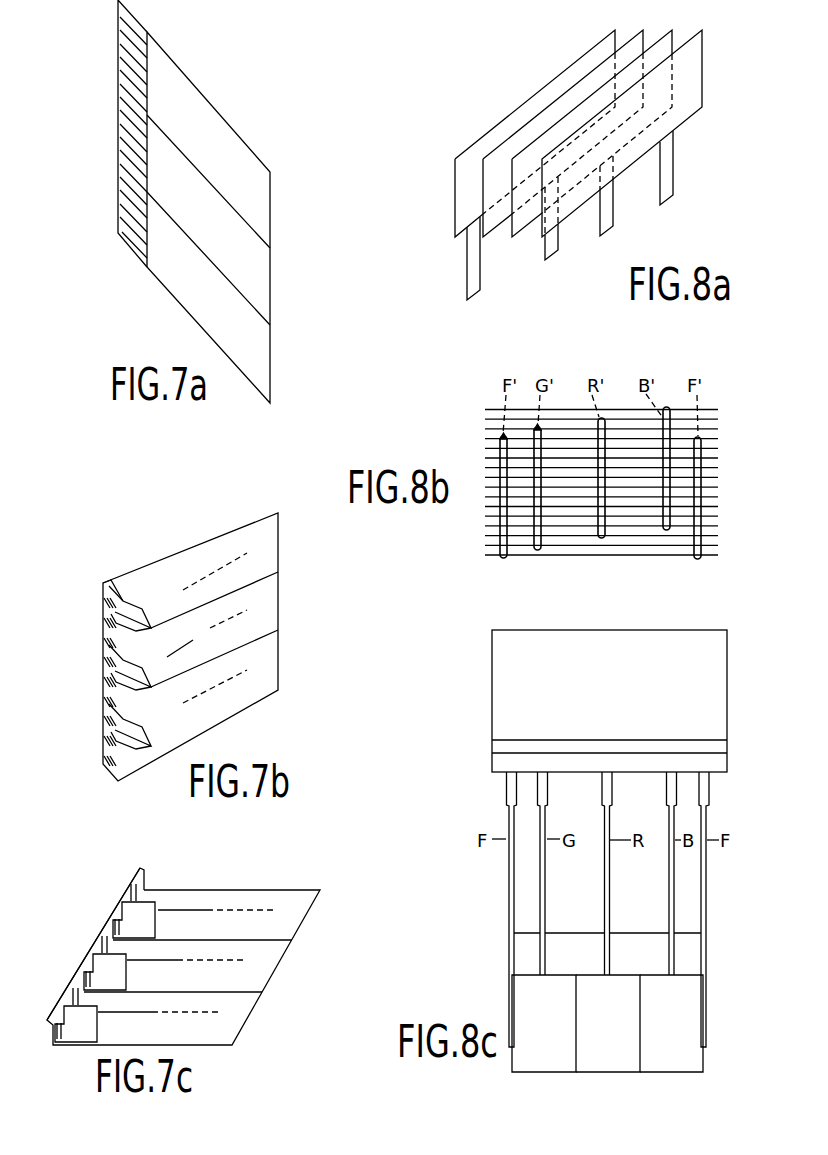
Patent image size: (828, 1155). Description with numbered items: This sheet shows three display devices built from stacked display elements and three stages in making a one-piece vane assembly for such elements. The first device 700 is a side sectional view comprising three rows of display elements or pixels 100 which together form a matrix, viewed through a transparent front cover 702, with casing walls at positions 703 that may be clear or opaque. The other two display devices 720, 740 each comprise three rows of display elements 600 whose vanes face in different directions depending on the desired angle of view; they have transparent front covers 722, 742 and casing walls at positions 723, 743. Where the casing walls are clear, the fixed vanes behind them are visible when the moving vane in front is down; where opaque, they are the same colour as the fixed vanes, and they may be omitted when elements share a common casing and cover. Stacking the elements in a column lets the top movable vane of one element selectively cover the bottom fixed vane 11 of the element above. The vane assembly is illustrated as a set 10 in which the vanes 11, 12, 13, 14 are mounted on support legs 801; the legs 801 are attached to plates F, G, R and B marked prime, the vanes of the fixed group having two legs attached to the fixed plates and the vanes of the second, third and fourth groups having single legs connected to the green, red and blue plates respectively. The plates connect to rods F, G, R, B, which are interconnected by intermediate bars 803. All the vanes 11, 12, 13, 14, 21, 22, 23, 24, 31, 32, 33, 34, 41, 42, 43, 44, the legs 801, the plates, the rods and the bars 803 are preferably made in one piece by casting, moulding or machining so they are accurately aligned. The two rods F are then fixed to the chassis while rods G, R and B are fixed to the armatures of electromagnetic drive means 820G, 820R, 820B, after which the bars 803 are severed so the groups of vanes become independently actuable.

In FIG. 7A, the device 700 is at (281, 268).
In FIG. 7A, the transparent front cover 702 is at (118, 100).
In FIG. 7A, the casing wall position 703 is at (120, 63).
In FIG. 7A, the display element 100 is at (212, 120).
In FIG. 8A, the set 10 is at (586, 152).
In FIG. 8A, the fixed vane 11 is at (542, 121).
In FIG. 8B, the fixed vane 11 is at (588, 554).
In FIG. 8A, the vane 12 is at (571, 121).
In FIG. 8B, the vane 12 is at (614, 544).
In FIG. 8A, the vane 13 is at (599, 121).
In FIG. 8B, the vane 13 is at (588, 535).
In FIG. 8A, the vane 14 is at (629, 121).
In FIG. 8B, the vane 14 is at (614, 525).
In FIG. 8A, the support leg 801 is at (667, 205).
In FIG. 8B, the vane 21 is at (588, 515).
In FIG. 8B, the vane 22 is at (614, 506).
In FIG. 8B, the vane 23 is at (588, 496).
In FIG. 8B, the vane 24 is at (614, 486).
In FIG. 8B, the vane 31 is at (588, 476).
In FIG. 8B, the vane 32 is at (614, 467).
In FIG. 8B, the vane 33 is at (588, 457).
In FIG. 8B, the vane 34 is at (614, 447).
In FIG. 8B, the vane 41 is at (588, 438).
In FIG. 8B, the vane 42 is at (614, 428).
In FIG. 8B, the vane 43 is at (588, 418).
In FIG. 8B, the vane 44 is at (614, 409).
In FIG. 8C, the vane 44 is at (512, 697).
In FIG. 8C, the intermediate bar 803 is at (685, 928).
In FIG. 8C, the electromagnetic drive means 820G is at (547, 1050).
In FIG. 8C, the electromagnetic drive means 820R is at (606, 1050).
In FIG. 8C, the electromagnetic drive means 820B is at (668, 1050).
In FIG. 7B, the display device 720 is at (293, 619).
In FIG. 7B, the display element 600 is at (173, 710).
In FIG. 7C, the display element 600 is at (192, 910).
In FIG. 7B, the casing wall position 723 is at (104, 585).
In FIG. 7B, the transparent front cover 722 is at (105, 752).
In FIG. 7C, the display device 740 is at (289, 984).
In FIG. 7C, the casing wall position 743 is at (112, 928).
In FIG. 7C, the transparent front cover 742 is at (102, 940).